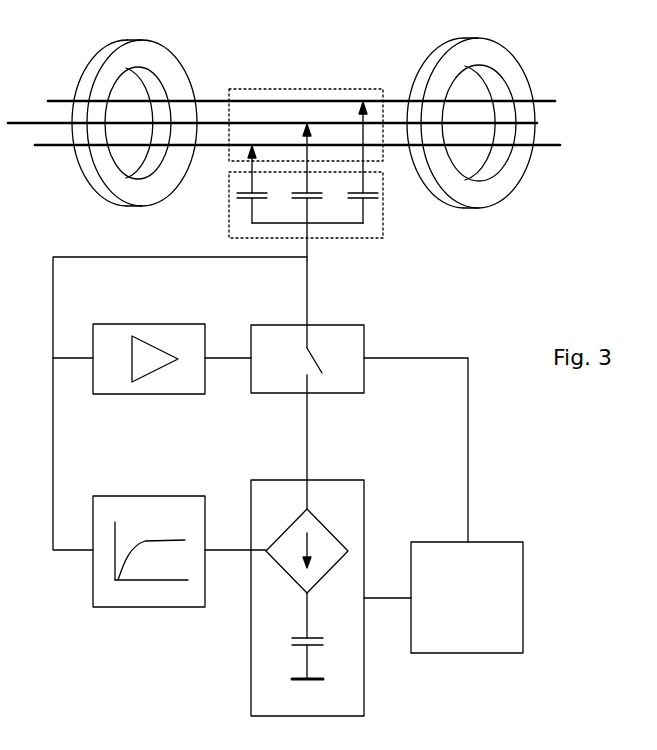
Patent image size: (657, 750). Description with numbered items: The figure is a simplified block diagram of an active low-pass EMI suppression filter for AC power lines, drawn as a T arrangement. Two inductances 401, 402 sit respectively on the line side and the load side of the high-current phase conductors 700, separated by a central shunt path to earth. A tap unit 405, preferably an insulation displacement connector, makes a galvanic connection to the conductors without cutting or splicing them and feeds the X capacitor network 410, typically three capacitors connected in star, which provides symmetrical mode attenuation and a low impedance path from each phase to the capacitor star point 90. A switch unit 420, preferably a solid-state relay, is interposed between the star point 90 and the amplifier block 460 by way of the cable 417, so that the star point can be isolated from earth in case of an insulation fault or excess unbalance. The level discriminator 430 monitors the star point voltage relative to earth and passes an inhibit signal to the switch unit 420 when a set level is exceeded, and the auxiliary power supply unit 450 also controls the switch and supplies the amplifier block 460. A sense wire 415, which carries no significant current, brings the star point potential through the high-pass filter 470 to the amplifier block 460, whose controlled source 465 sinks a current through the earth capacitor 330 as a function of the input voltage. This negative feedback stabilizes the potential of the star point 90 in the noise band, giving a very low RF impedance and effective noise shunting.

The inductance 401 is at (107, 82).
The inductance 402 is at (480, 47).
The phase conductors 700 is at (572, 52).
The tap unit 405 is at (307, 135).
The X capacitor network 410 is at (235, 177).
The sense wire 415 is at (90, 257).
The capacitor star point 90 is at (308, 257).
The cable 417 is at (308, 293).
The switch unit 420 is at (357, 367).
The level discriminator 430 is at (145, 387).
The high-pass filter 470 is at (130, 598).
The amplifier block 460 is at (358, 658).
The controlled source 465 is at (330, 542).
The earth capacitor 330 is at (290, 638).
The auxiliary power supply unit 450 is at (507, 552).